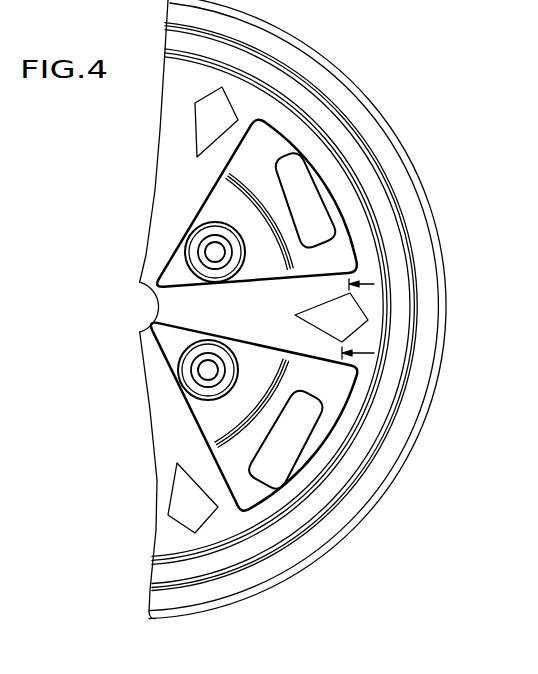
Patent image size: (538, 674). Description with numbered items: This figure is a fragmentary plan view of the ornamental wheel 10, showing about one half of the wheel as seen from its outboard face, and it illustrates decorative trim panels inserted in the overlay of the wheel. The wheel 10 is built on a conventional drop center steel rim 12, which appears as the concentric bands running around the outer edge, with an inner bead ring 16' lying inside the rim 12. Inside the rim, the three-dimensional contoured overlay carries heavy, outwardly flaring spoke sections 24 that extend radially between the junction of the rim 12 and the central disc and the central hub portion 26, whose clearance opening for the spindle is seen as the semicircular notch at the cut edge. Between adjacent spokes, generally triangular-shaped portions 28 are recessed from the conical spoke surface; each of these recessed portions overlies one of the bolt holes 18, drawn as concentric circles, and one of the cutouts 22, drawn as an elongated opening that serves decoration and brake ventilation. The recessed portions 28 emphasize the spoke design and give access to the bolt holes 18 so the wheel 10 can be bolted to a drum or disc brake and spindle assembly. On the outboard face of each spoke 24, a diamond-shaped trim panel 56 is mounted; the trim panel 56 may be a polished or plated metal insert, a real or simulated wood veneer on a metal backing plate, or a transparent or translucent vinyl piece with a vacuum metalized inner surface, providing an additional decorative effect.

The wheel 10 is at (441, 197).
The drop center steel rim 12 is at (383, 143).
The annular bead ring 16' is at (318, 307).
The bolt holes 18 is at (303, 319).
The cutouts 22 is at (273, 457).
The spoke sections 24 is at (213, 482).
The central hub portion 26 is at (150, 333).
The triangular-shaped portions 28 is at (338, 252).
The trim panel 56 is at (215, 108).